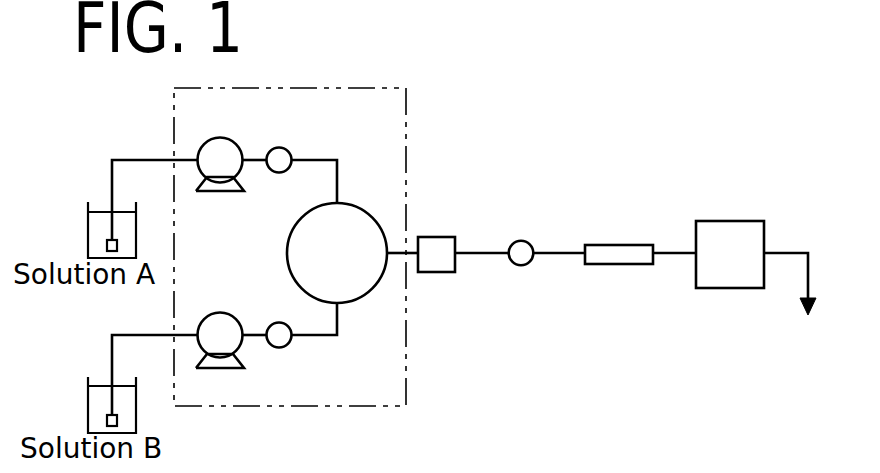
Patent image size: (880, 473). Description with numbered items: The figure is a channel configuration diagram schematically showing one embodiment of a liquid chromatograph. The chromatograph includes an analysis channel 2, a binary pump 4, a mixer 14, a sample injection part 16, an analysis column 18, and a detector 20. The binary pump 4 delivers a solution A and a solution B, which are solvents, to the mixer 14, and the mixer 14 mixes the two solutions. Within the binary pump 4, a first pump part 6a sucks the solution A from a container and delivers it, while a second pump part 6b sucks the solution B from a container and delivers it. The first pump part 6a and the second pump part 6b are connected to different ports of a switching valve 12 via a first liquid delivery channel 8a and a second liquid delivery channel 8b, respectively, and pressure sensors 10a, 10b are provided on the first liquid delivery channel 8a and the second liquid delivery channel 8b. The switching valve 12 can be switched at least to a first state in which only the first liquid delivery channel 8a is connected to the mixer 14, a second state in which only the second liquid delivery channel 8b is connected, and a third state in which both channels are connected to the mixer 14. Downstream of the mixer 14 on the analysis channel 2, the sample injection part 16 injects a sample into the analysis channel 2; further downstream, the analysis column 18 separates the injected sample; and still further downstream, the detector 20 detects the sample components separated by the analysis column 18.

The analysis channel 2 is at (483, 251).
The binary pump 4 is at (353, 88).
The first pump part 6a is at (237, 138).
The second pump part 6b is at (221, 312).
The first liquid delivery channel 8a is at (336, 157).
The second liquid delivery channel 8b is at (328, 338).
The pressure sensor 10a is at (287, 146).
The pressure sensor 10b is at (282, 348).
The switching valve 12 is at (358, 203).
The mixer 14 is at (440, 236).
The sample injection part 16 is at (522, 241).
The analysis column 18 is at (632, 245).
The detector 20 is at (748, 220).